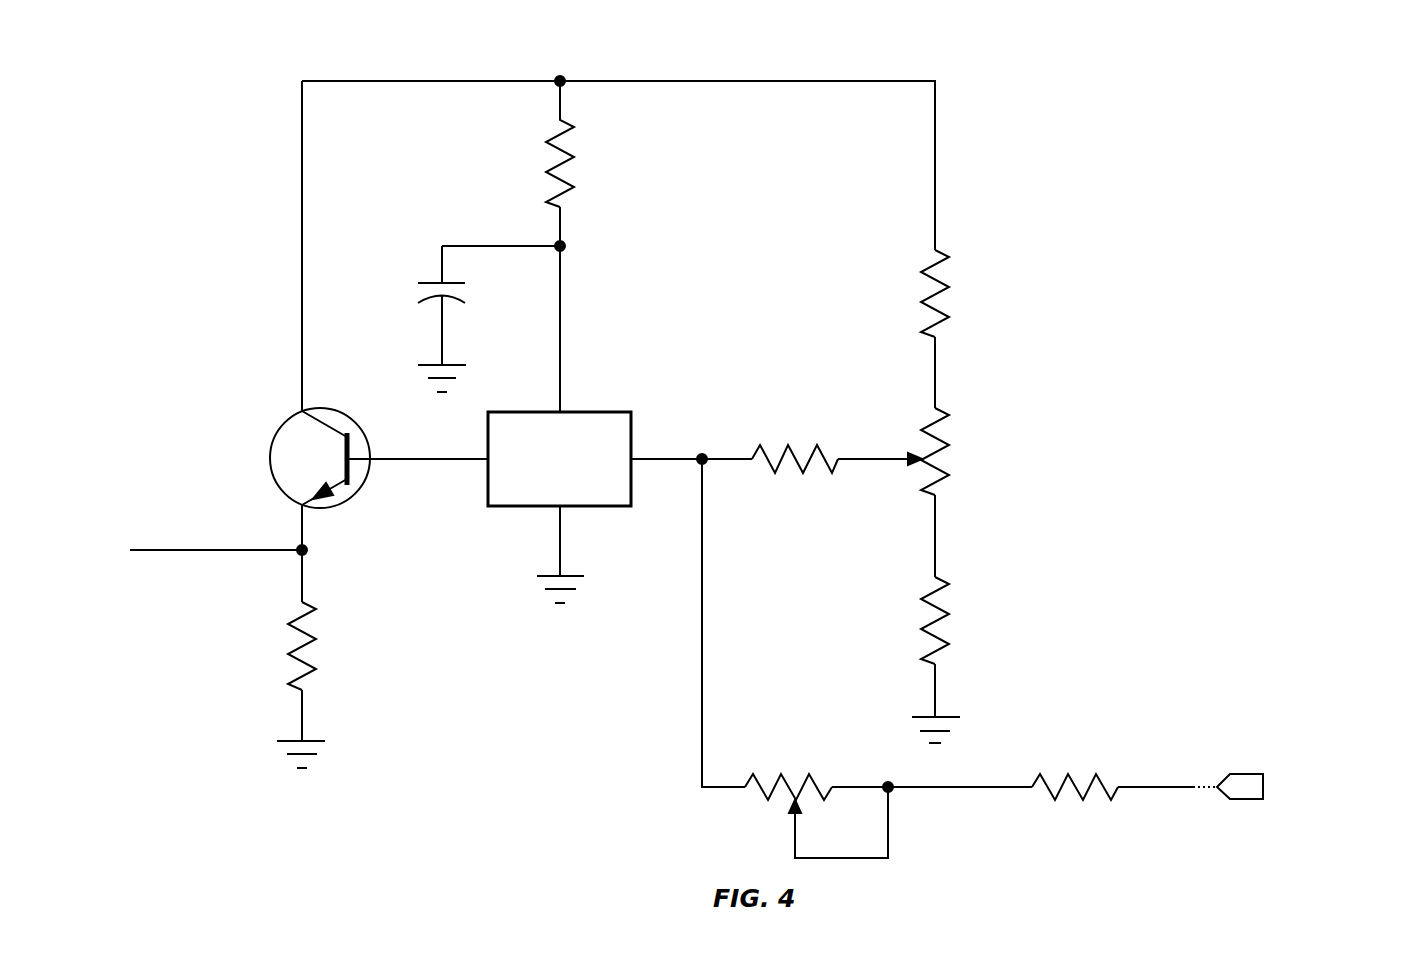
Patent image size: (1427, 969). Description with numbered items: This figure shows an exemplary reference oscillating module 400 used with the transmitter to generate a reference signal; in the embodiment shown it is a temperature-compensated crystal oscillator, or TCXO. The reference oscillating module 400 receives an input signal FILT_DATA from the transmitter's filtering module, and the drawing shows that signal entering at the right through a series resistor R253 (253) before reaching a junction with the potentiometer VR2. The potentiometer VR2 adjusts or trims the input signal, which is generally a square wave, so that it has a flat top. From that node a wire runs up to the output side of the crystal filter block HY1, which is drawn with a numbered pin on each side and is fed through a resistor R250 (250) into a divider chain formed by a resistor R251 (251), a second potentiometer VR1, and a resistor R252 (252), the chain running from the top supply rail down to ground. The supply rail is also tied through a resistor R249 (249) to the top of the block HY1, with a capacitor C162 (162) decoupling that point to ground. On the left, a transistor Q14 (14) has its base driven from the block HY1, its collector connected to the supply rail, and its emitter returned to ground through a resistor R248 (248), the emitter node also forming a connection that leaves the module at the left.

The reference oscillating module 400 is at (764, 457).
The resistor R249 200 ohm R249 is at (593, 144).
The resistor R249 249 is at (593, 144).
The capacitor C162 .001uF C162 is at (402, 319).
The capacitor C162 162 is at (402, 319).
The hybrid filter HY1 13MHz HY1 is at (559, 459).
The resistor R250 4.75k R250 is at (795, 430).
The resistor R250 250 is at (795, 430).
The resistor R251 470 ohm R251 is at (969, 293).
The resistor R251 251 is at (969, 293).
The variable resistor VR1 1k VR1 is at (965, 451).
The resistor R252 200 ohm R252 is at (970, 620).
The resistor R252 252 is at (970, 620).
The transistor Q14 MMBT3904 Q14 is at (261, 443).
The transistor Q14 14 is at (261, 443).
The resistor R248 1k R248 is at (333, 646).
The resistor R248 248 is at (333, 646).
The variable resistor VR2 50k VR2 is at (788, 757).
The resistor R253 15k R253 is at (1075, 758).
The resistor R253 253 is at (1075, 758).